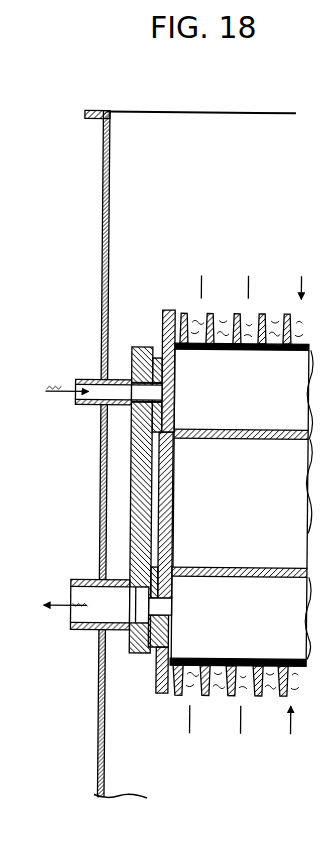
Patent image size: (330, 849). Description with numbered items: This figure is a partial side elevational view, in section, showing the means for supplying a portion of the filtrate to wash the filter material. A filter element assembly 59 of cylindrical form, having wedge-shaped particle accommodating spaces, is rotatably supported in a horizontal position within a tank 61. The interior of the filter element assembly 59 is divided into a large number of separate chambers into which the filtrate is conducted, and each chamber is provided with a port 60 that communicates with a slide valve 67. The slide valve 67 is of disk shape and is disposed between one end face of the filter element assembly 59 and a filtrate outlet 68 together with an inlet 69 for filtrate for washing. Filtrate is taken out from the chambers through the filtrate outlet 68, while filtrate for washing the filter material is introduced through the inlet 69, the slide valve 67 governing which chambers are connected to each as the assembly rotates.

The tank 61 is at (103, 186).
The inlet for filtrate for washing 69 is at (90, 380).
The port 60 is at (174, 395).
The filtrate outlet 68 is at (72, 620).
The slide valve 67 is at (138, 653).
The filter element assembly 59 is at (162, 693).